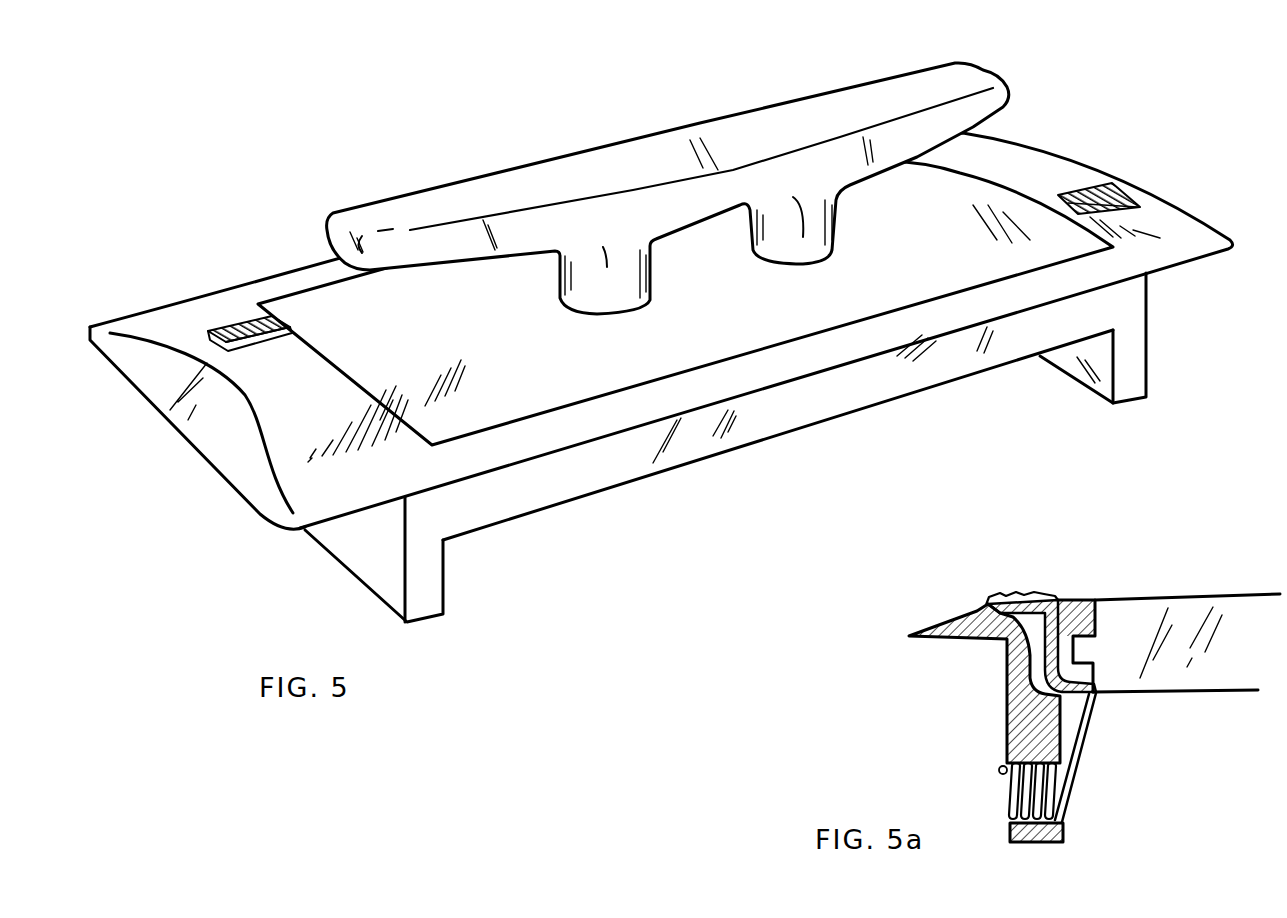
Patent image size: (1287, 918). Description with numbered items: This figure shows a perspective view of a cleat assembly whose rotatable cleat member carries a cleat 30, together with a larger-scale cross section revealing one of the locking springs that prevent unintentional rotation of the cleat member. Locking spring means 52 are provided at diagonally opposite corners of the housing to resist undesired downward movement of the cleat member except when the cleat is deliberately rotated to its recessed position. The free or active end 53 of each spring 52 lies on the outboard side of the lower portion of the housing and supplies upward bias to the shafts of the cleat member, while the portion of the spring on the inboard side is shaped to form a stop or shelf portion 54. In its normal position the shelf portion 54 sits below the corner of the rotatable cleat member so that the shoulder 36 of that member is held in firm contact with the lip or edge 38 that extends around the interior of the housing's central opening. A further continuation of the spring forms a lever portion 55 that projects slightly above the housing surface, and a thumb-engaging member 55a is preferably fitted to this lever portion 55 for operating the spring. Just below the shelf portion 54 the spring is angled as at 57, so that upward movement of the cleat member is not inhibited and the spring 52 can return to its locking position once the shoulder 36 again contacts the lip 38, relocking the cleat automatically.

In FIG. 5, the cleat 30 is at (792, 110).
In FIG. 5, the thumb-engaging member 55a is at (233, 326).
In FIG. 5A, the thumb-engaging member 55a is at (1020, 590).
In FIG. 5A, the lever portion 55 is at (1077, 598).
In FIG. 5A, the lip or edge 38 is at (1087, 600).
In FIG. 5A, the shoulder 36 is at (1083, 648).
In FIG. 5A, the stop or shelf portion 54 is at (1080, 680).
In FIG. 5A, the angled portion 57 is at (1085, 750).
In FIG. 5A, the free or active end 53 is at (999, 770).
In FIG. 5A, the locking spring means 52 is at (1057, 807).